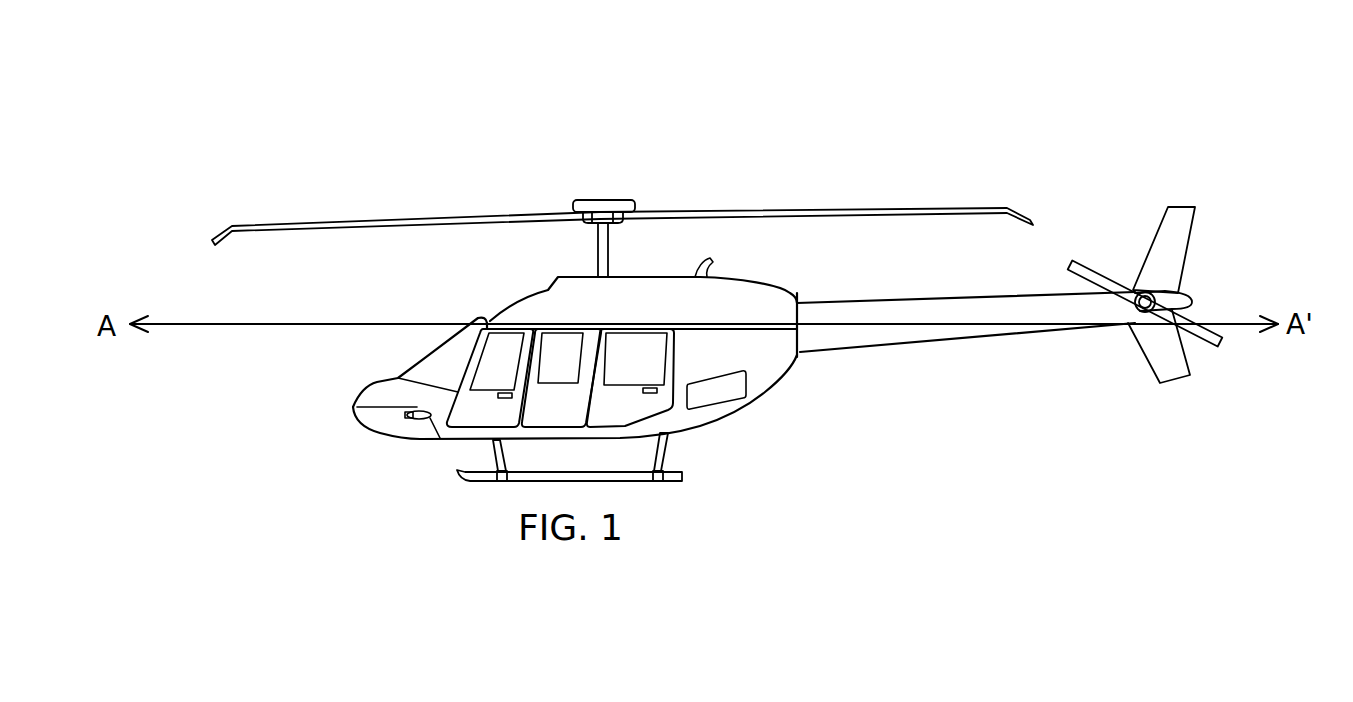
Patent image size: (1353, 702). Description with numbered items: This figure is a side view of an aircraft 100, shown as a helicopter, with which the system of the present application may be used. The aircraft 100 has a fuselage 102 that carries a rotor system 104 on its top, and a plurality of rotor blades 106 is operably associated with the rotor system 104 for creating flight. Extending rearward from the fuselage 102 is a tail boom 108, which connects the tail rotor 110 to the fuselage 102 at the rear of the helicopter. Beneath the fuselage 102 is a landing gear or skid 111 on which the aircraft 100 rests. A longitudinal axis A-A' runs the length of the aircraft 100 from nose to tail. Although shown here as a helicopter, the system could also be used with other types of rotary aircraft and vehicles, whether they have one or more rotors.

The aircraft 100 is at (441, 132).
The fuselage 102 is at (392, 377).
The rotor system 104 is at (666, 165).
The rotor blades 106 is at (846, 207).
The tail boom 108 is at (928, 344).
The tail rotor 110 is at (1091, 262).
The landing gear or skid 111 is at (665, 451).